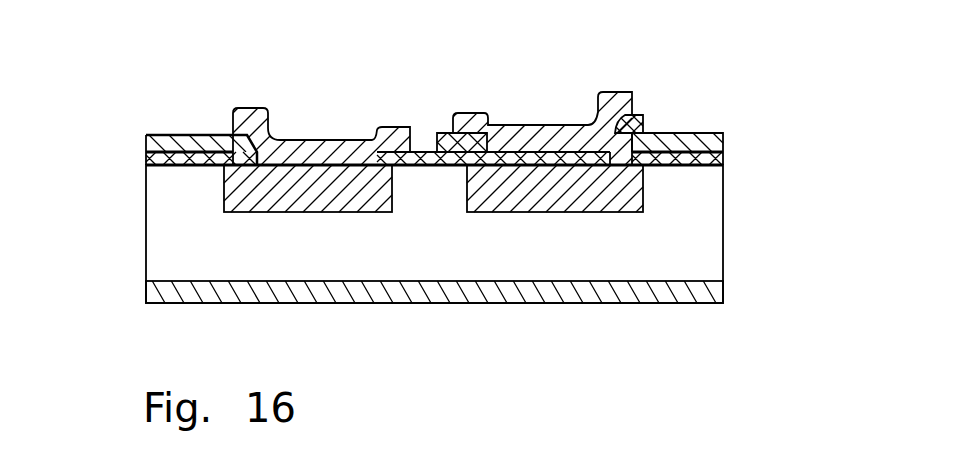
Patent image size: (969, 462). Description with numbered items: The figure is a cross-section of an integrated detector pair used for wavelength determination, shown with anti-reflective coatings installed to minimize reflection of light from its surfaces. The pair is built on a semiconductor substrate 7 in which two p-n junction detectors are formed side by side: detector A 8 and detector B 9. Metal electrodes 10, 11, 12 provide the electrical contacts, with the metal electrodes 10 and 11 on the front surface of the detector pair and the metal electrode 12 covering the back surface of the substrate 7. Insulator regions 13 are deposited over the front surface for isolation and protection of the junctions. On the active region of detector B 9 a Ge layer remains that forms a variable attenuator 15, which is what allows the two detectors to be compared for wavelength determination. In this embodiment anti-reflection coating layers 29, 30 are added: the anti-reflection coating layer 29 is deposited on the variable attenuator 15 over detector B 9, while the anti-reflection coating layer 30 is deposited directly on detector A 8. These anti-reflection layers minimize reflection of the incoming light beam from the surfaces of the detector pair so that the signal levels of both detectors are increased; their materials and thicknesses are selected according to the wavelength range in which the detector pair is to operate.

The semiconductor substrate 7 is at (146, 249).
The detector A 8 is at (257, 184).
The detector B 9 is at (617, 190).
The metal electrode 10 is at (146, 142).
The metal electrode 11 is at (723, 138).
The metal electrode 12 is at (146, 293).
The insulator region 13 is at (723, 157).
The variable attenuator 15 is at (643, 123).
The anti-reflection coating layer 29 is at (573, 128).
The anti-reflection coating layer 30 is at (297, 145).